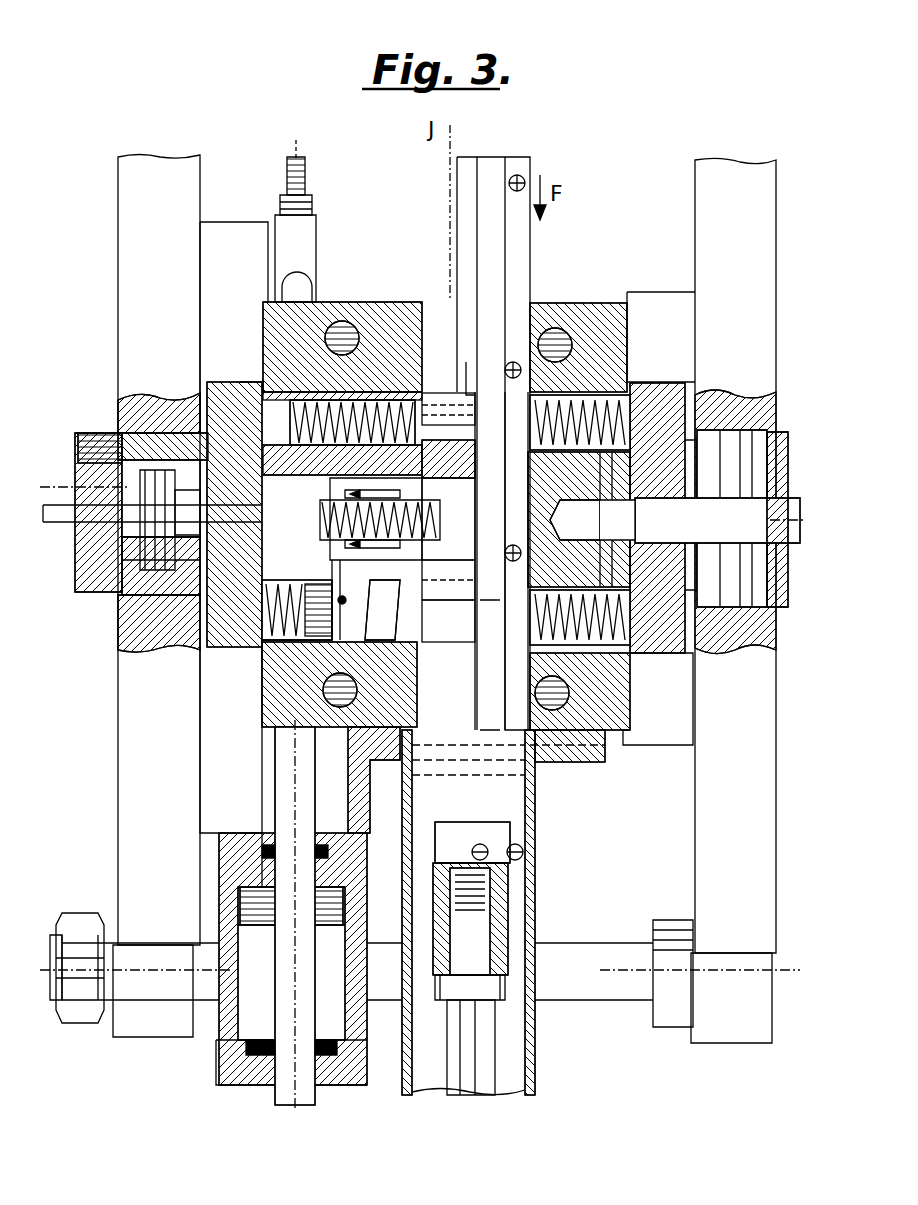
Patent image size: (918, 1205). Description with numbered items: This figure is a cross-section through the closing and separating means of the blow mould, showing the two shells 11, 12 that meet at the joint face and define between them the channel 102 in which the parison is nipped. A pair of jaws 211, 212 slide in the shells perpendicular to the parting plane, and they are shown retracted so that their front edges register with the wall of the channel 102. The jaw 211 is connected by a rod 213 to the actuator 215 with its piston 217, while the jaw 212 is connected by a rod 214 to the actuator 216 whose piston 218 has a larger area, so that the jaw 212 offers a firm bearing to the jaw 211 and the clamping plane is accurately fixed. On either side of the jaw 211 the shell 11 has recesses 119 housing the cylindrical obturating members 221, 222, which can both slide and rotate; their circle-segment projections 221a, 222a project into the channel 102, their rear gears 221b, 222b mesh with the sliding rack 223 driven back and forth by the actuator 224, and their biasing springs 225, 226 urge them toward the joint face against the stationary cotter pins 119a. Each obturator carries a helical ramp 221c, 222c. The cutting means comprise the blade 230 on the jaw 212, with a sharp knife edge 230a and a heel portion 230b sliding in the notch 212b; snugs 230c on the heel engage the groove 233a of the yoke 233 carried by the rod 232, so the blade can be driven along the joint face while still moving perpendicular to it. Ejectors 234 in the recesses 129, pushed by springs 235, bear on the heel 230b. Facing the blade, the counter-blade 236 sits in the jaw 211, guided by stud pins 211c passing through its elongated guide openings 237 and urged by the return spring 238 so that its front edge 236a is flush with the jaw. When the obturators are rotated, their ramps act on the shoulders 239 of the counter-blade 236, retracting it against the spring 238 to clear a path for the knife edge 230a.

The shell 11 is at (246, 178).
The shell 12 is at (628, 250).
The channel 102 is at (453, 519).
The recesses 119 is at (205, 393).
The cotter pins 119a is at (268, 666).
The recesses 129 is at (568, 348).
The jaw 211 is at (252, 470).
The stud pins 211c is at (355, 596).
The jaw 212 is at (579, 520).
The notch 212b is at (553, 540).
The rod 213 is at (160, 555).
The rod 214 is at (720, 519).
The actuator 215 is at (85, 560).
The actuator 216 is at (738, 640).
The piston 217 is at (132, 425).
The piston 218 is at (737, 400).
The obturating member 221 is at (395, 398).
The projection 221a is at (426, 414).
The gear 221b is at (266, 332).
The helical ramp 221c is at (388, 386).
The obturating member 222 is at (332, 604).
The projection 222a is at (451, 621).
The gear 222b is at (262, 650).
The helical ramp 222c is at (358, 690).
The sliding rack 223 is at (310, 225).
The actuator 224 is at (221, 1000).
The biasing spring 225 is at (248, 390).
The biasing spring 226 is at (200, 632).
The blade 230 is at (519, 162).
The knife edge 230a is at (462, 395).
The heel portion 230b is at (525, 388).
The snugs 230c is at (492, 845).
The rod 232 is at (487, 1062).
The yoke 233 is at (452, 823).
The groove 233a is at (470, 862).
The ejectors 234 is at (632, 350).
The biasing springs 235 is at (634, 395).
The counter-blade 236 is at (415, 510).
The front edge 236a is at (440, 613).
The guide openings 237 is at (452, 459).
The return spring 238 is at (262, 505).
The shoulders 239 is at (322, 345).